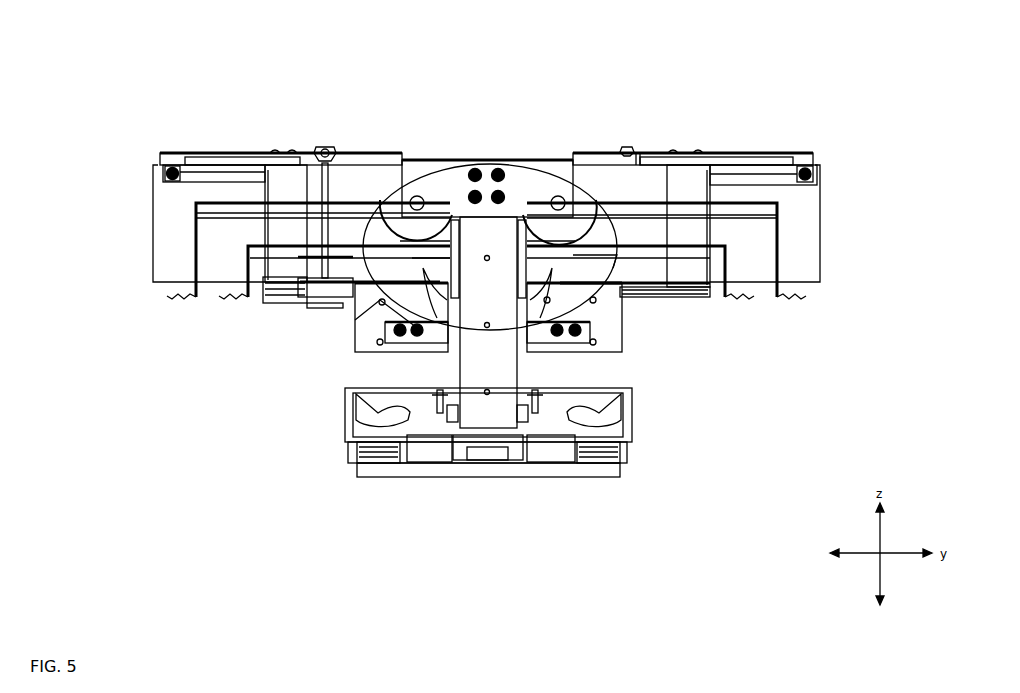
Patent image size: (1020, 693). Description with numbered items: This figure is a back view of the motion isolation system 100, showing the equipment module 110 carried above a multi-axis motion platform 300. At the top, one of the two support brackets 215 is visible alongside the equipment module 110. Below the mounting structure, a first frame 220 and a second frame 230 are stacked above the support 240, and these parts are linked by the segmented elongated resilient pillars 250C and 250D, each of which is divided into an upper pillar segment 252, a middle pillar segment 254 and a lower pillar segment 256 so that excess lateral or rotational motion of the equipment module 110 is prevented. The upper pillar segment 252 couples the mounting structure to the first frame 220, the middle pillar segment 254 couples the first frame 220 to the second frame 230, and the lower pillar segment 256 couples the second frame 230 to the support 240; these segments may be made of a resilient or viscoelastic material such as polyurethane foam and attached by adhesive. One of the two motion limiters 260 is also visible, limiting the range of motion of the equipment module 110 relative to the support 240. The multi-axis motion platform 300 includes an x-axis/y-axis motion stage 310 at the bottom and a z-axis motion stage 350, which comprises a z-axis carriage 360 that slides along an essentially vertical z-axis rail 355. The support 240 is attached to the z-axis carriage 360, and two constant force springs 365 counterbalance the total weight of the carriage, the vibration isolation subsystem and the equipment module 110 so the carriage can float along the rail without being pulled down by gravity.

The motion isolation system 100 is at (110, 43).
The equipment module 110 is at (822, 280).
The support bracket 215 is at (220, 153).
The first frame 220 is at (645, 205).
The second frame 230 is at (618, 240).
The support 240 is at (283, 301).
The elongated resilient pillar 250C is at (92, 198).
The elongated resilient pillar 250D is at (896, 170).
The upper pillar segment 252 is at (263, 192).
The middle pillar segment 254 is at (270, 228).
The lower pillar segment 256 is at (263, 273).
The motion limiter 260 is at (327, 307).
The multi-axis motion platform 300 is at (732, 455).
The x-axis/y-axis motion stage 310 is at (635, 493).
The z-axis motion stage 350 is at (741, 310).
The z-axis rail 355 is at (517, 355).
The z-axis carriage 360 is at (560, 320).
The constant force spring 365 is at (380, 317).